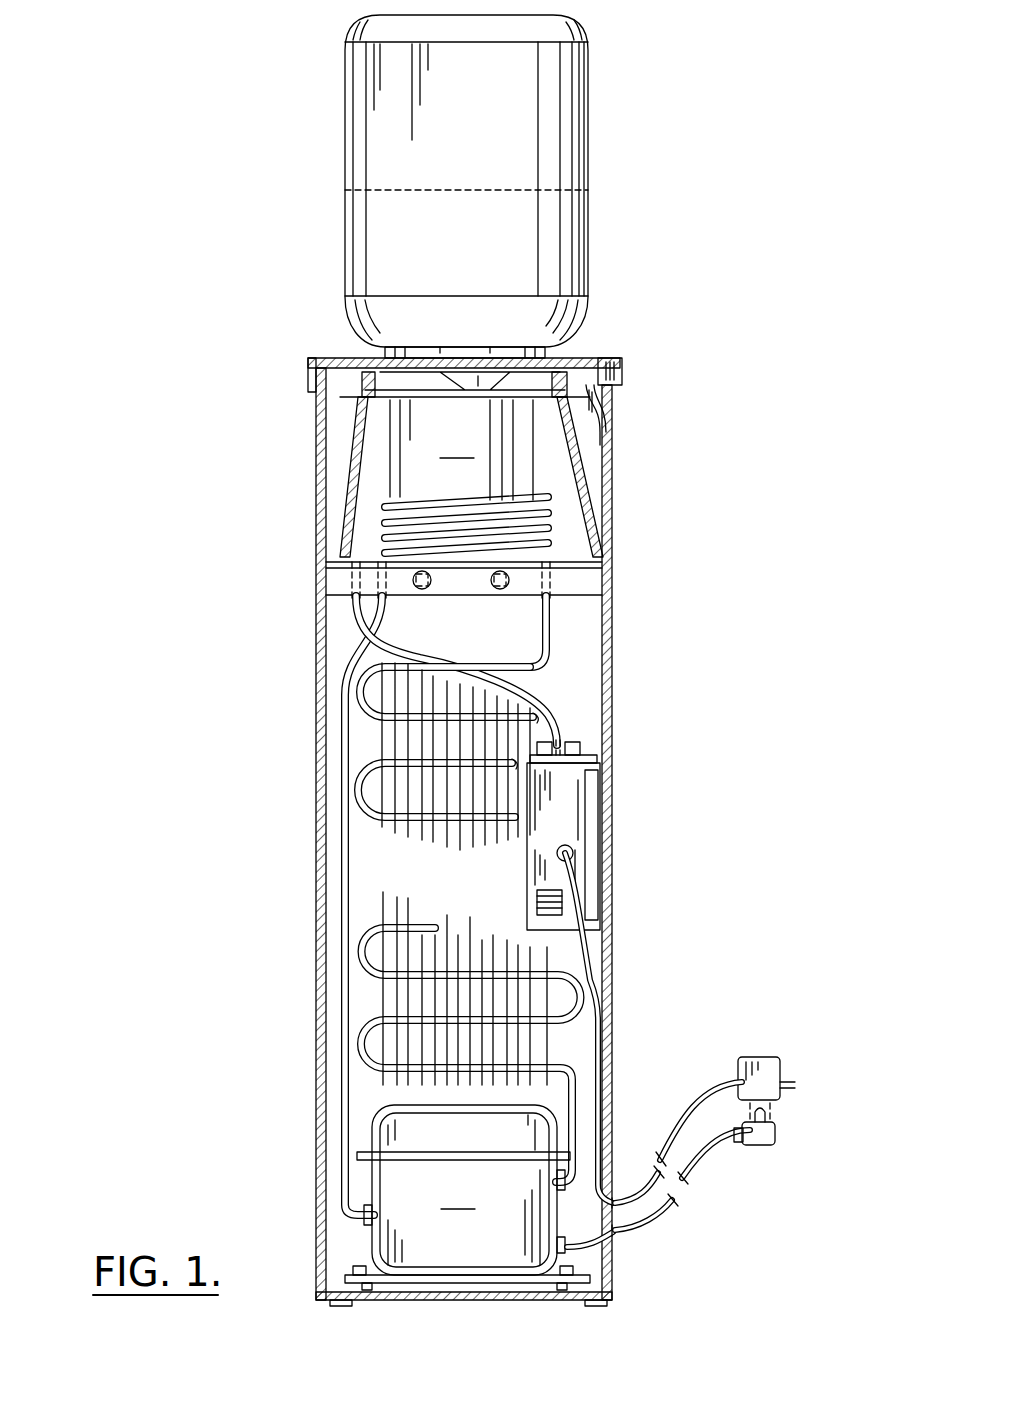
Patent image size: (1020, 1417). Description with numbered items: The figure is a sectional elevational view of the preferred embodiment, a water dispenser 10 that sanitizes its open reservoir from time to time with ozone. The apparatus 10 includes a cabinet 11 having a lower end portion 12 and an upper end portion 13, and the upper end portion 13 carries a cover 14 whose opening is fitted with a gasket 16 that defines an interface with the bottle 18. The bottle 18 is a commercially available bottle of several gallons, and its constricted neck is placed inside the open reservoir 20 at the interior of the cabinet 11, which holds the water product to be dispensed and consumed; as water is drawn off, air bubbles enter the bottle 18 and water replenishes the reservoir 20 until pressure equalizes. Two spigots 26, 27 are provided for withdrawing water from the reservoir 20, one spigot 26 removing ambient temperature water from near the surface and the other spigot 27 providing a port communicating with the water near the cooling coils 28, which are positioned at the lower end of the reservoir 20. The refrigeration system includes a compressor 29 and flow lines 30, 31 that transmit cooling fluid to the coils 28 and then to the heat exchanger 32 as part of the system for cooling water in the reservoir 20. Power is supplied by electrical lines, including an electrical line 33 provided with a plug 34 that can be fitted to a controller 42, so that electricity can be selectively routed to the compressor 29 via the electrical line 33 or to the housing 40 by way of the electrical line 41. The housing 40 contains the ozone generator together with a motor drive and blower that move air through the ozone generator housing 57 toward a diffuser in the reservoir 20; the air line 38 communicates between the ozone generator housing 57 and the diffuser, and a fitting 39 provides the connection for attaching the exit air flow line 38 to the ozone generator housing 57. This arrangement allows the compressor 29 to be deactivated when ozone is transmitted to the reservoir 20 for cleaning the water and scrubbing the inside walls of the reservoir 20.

The water dispenser 10 is at (266, 132).
The cabinet 11 is at (612, 673).
The lower end portion 12 is at (318, 1230).
The upper end portion 13 is at (612, 420).
The cover 14 is at (603, 362).
The gasket 16 is at (575, 342).
The bottle 18 is at (575, 228).
The open reservoir 20 is at (471, 498).
The spigot 26 is at (420, 590).
The spigot 27 is at (500, 590).
The cooling coils 28 is at (545, 545).
The compressor 29 is at (467, 1197).
The flow line 30 is at (345, 1097).
The flow line 31 is at (580, 1097).
The heat exchanger 32 is at (400, 740).
The electrical line 33 is at (658, 1220).
The plug 34 is at (763, 1140).
The air line 38 is at (352, 614).
The fitting 39 is at (560, 732).
The housing 40 is at (590, 892).
The electrical line 41 is at (600, 990).
The controller 42 is at (762, 1058).
The ozone generator housing 57 is at (600, 748).